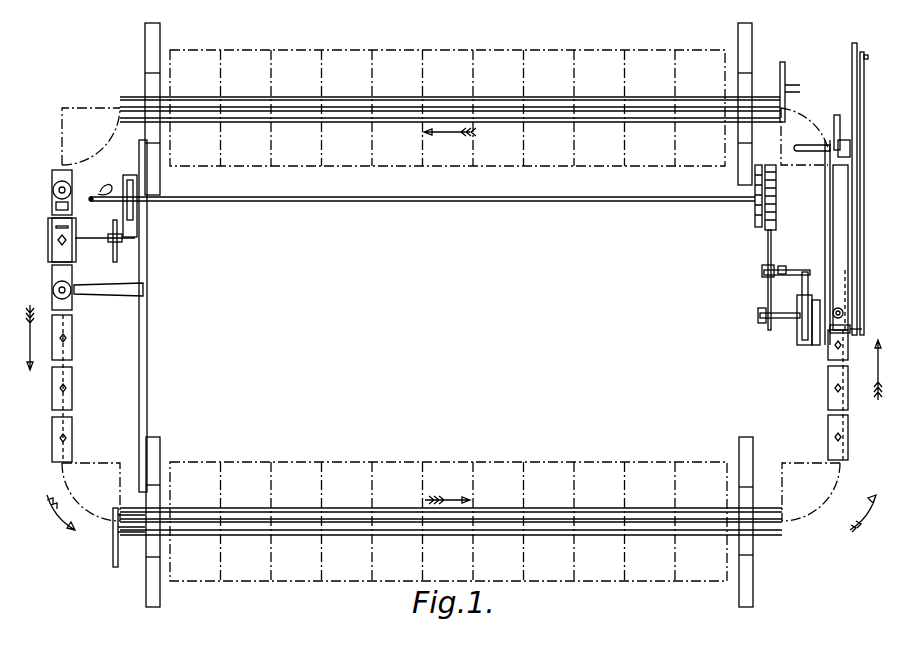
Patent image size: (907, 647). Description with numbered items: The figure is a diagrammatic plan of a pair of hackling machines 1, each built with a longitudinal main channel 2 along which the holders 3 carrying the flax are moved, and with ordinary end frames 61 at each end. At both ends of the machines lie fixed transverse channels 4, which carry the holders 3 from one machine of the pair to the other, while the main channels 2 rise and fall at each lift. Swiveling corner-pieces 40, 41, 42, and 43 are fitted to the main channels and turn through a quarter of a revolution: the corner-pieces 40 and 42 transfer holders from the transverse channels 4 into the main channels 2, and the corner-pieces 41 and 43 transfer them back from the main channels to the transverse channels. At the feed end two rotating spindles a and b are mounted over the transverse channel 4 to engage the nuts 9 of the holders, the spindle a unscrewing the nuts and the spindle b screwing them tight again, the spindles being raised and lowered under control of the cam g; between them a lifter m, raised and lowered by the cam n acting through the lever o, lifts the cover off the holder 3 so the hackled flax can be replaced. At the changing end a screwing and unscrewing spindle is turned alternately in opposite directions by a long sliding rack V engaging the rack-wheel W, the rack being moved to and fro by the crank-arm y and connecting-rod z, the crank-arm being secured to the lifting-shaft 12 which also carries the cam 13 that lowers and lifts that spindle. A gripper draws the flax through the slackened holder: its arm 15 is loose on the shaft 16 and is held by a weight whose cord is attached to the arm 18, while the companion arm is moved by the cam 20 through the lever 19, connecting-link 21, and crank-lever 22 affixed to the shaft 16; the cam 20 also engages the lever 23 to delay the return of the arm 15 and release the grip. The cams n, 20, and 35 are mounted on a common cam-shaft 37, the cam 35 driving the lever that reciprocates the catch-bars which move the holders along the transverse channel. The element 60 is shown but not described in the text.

The machine 1 is at (448, 303).
The main channel 2 is at (428, 101).
The holder 3 is at (233, 108).
The transverse channel 4 is at (73, 412).
The nut 9 is at (62, 438).
The lifting-shaft 12 is at (812, 137).
The cam 13 is at (842, 127).
The arm 15 is at (815, 305).
The shaft 16 is at (798, 338).
The arm 18 is at (779, 308).
The lever 19 is at (762, 261).
The cam 20 is at (776, 212).
The connecting-link 21 is at (762, 272).
The crank-lever 22 is at (784, 268).
The lever 23 is at (768, 297).
The cam 35 is at (748, 202).
The cam-shaft 37 is at (422, 213).
The swiveling corner-piece 40 is at (91, 492).
The swiveling corner-piece 41 is at (811, 492).
The swiveling corner-piece 42 is at (804, 140).
The swiveling corner-piece 43 is at (91, 136).
The flange 60 is at (116, 537).
The end frame 61 is at (446, 315).
The rotating spindle a is at (53, 190).
The rotating spindle b is at (53, 290).
The cam g is at (105, 182).
The lifter m is at (72, 236).
The cam n is at (131, 178).
The lever o is at (138, 236).
The sliding rack V is at (825, 236).
The rack-wheel W is at (844, 313).
The crank-arm y is at (856, 82).
The connecting-rod z is at (863, 189).